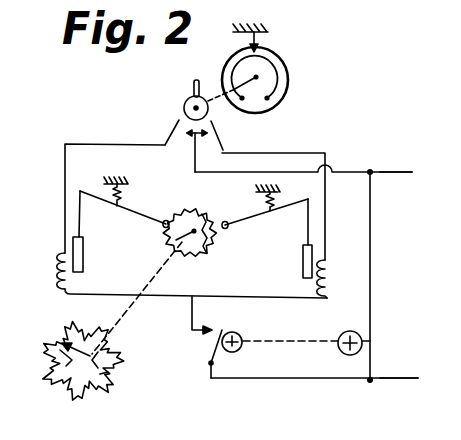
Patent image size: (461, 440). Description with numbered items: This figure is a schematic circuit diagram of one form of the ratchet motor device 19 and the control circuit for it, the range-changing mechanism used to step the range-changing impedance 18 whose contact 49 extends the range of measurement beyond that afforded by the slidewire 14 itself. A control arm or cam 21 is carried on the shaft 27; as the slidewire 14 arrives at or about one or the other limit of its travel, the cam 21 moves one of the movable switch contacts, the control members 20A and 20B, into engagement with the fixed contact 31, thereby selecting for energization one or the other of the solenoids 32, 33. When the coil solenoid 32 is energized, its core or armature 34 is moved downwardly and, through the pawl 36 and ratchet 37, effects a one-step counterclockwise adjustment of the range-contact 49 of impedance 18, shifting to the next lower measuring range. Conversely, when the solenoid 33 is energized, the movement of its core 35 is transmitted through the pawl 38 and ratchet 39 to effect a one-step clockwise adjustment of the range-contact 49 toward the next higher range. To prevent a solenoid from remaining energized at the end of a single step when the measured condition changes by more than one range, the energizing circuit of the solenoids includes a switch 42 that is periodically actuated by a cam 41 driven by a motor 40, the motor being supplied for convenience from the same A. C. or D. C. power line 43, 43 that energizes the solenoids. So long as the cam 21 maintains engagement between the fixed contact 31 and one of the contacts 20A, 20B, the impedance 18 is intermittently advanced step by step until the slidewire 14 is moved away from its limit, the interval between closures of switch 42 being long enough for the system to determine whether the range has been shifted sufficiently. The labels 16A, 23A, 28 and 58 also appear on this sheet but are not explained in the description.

The slidewire 14 is at (280, 83).
The housing 16A is at (403, 7).
The range-changing impedance 18 is at (118, 377).
The motor device 19 is at (124, 171).
The control member 20A is at (173, 131).
The motor control member 20B is at (226, 132).
The control arm or cam 21 is at (193, 92).
The mounting 23A is at (267, 7).
The shaft 27 is at (284, 63).
The mechanical linkage 28 is at (128, 312).
The fixed contact 31 is at (191, 140).
The solenoid 32 is at (57, 262).
The solenoid 33 is at (331, 283).
The core or armature 34 is at (84, 262).
The core 35 is at (301, 264).
The pawl 36 is at (163, 226).
The ratchet 37 is at (173, 239).
The pawl 38 is at (229, 228).
The ratchet 39 is at (211, 248).
The motor 40 is at (346, 355).
The cam 41 is at (238, 348).
The switch 42 is at (226, 320).
The power line 43 is at (393, 175).
The range-contact 49 is at (102, 361).
The lead 58 is at (460, 103).